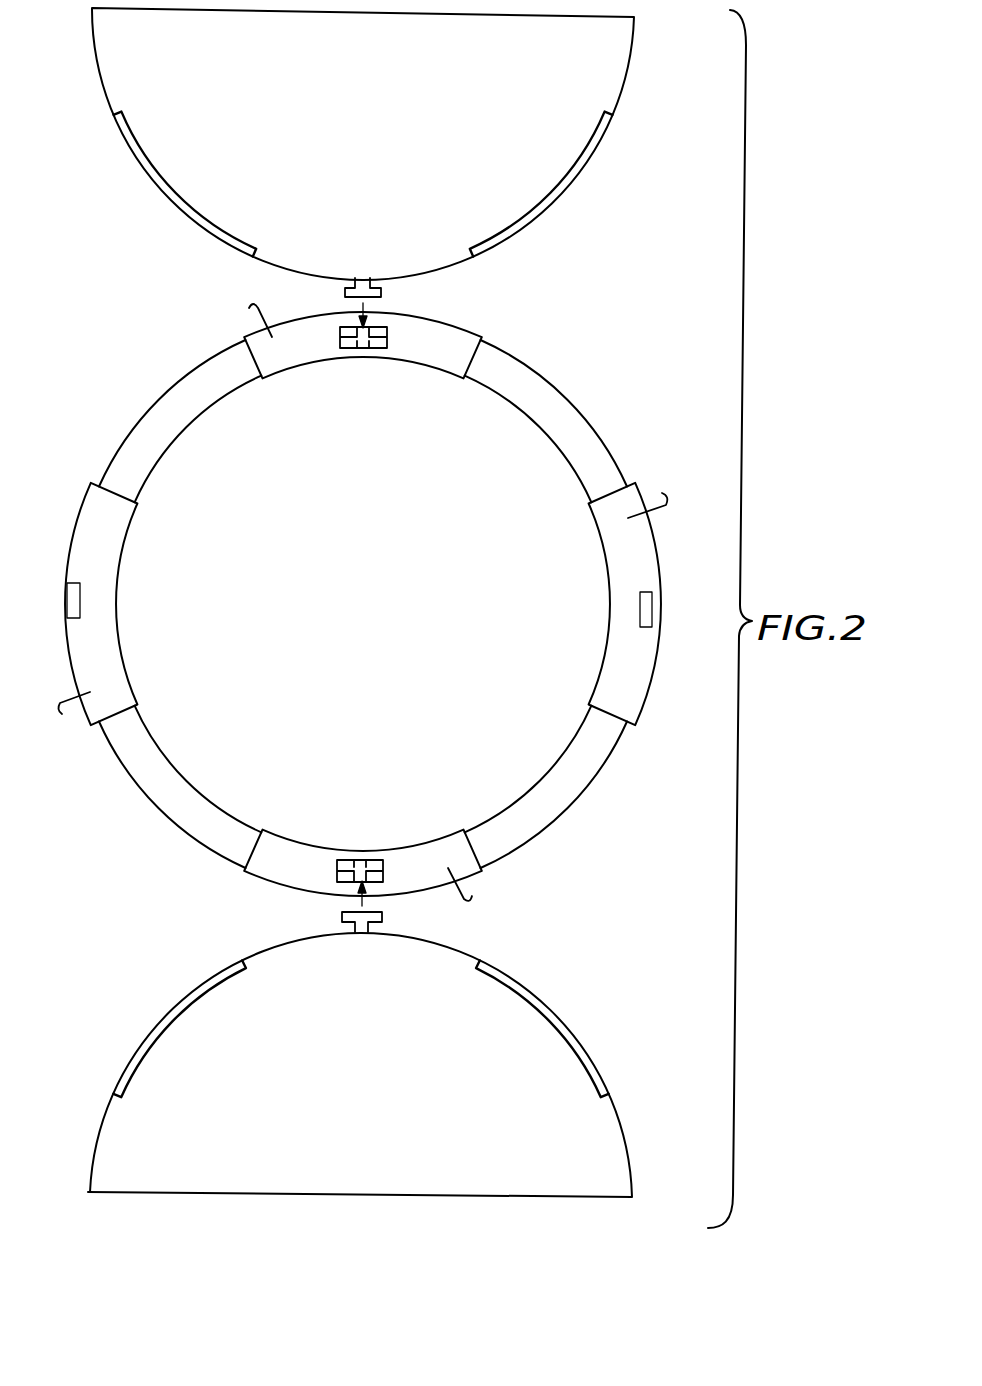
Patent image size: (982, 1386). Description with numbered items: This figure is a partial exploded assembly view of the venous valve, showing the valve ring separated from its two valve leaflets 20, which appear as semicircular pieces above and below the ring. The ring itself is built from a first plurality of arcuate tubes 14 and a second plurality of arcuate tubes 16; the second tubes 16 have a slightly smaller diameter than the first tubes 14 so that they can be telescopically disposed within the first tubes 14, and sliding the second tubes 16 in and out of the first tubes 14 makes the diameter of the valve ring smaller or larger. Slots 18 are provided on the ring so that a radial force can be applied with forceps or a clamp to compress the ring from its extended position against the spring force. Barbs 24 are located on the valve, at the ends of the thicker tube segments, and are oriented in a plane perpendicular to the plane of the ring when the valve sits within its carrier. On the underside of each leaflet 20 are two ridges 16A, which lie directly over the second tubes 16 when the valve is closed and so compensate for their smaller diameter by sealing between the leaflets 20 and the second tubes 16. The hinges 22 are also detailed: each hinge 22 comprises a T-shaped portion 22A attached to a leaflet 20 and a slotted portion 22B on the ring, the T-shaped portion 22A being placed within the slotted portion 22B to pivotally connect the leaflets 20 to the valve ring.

The first arcuate tubes 14 is at (293, 318).
The second arcuate tubes 16 is at (192, 375).
The ridges 16A is at (169, 182).
The slots 18 is at (80, 602).
The valve leaflets 20 is at (268, 193).
The hinges 22 is at (469, 319).
The T-shaped portion 22A is at (386, 292).
The slotted portion 22B is at (362, 349).
The barbs 24 is at (250, 310).